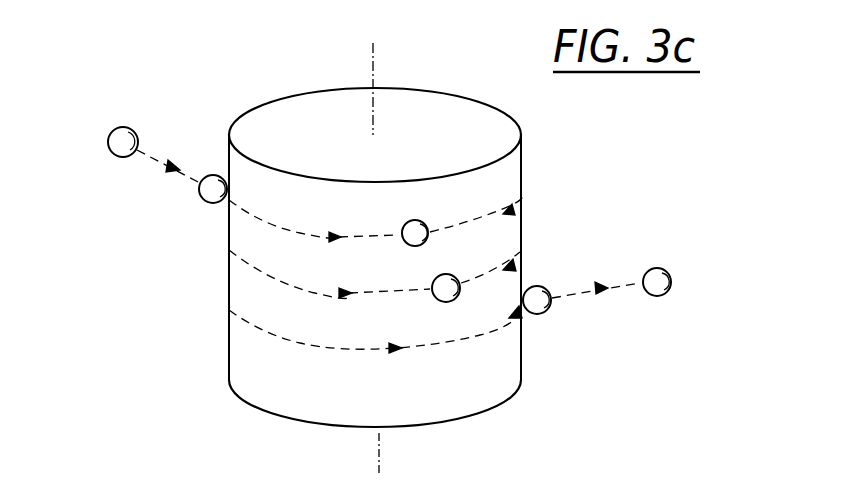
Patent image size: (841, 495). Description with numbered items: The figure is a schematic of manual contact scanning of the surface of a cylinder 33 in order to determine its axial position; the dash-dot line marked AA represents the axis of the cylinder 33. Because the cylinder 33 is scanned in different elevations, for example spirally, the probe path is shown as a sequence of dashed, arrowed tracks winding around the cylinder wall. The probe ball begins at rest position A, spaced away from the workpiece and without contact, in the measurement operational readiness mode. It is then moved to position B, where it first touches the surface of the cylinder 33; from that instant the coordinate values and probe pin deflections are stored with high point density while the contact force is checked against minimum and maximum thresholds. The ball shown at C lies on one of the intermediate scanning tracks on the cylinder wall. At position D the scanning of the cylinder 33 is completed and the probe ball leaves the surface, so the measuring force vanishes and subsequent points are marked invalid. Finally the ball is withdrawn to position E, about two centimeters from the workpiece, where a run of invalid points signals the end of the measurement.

The cylinder 33 is at (286, 102).
The axis of rotation AA is at (373, 76).
The rest position A is at (122, 128).
The contact position B is at (212, 203).
The ball on intermediate track C is at (445, 302).
The scanning end position D is at (540, 314).
The withdrawn position E is at (660, 268).